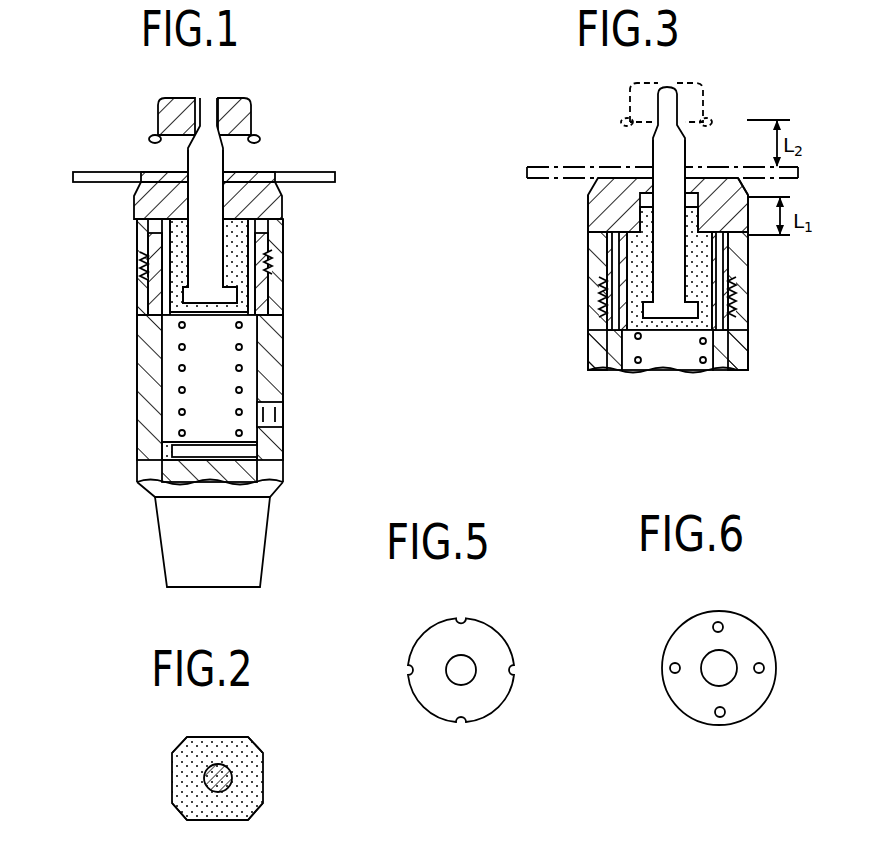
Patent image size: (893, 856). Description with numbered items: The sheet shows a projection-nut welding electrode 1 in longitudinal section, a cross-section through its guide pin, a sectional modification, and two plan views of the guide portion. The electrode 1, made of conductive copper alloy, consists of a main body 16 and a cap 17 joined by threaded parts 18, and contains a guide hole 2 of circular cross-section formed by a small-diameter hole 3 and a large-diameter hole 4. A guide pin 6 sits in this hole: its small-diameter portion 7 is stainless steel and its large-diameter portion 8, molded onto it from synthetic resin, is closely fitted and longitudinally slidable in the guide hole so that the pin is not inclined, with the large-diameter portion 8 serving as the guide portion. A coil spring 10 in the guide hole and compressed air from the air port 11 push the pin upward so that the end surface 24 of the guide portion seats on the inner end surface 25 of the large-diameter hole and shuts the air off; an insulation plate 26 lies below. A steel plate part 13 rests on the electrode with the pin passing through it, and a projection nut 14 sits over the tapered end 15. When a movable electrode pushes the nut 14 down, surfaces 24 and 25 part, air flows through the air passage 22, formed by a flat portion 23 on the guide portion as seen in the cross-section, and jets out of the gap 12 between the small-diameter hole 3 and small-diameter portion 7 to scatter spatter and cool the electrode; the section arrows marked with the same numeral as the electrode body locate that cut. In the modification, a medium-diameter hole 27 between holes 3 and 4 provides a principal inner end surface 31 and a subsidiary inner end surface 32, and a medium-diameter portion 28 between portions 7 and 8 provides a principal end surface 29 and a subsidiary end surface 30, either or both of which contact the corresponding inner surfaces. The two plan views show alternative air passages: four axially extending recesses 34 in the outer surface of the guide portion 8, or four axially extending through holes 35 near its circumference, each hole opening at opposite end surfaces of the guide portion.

In FIG. 1, the electrode 1 is at (130, 353).
In FIG. 3, the electrode 1 is at (572, 299).
In FIG. 1, the guide hole 2 is at (176, 414).
In FIG. 3, the guide hole 2 is at (710, 349).
In FIG. 1, the small-diameter hole 3 is at (238, 207).
In FIG. 3, the small-diameter hole 3 is at (653, 187).
In FIG. 1, the large-diameter hole 4 is at (257, 370).
In FIG. 3, the large-diameter hole 4 is at (673, 365).
In FIG. 1, the guide pin 6 is at (228, 159).
In FIG. 3, the guide pin 6 is at (689, 142).
In FIG. 5, the guide pin 6 is at (412, 634).
In FIG. 6, the guide pin 6 is at (668, 622).
In FIG. 1, the small-diameter portion 7 is at (190, 158).
In FIG. 3, the small-diameter portion 7 is at (680, 158).
In FIG. 2, the small-diameter portion 7 is at (203, 778).
In FIG. 5, the small-diameter portion 7 is at (458, 682).
In FIG. 6, the small-diameter portion 7 is at (713, 686).
In FIG. 1, the large-diameter portion (guide portion) 8 is at (247, 295).
In FIG. 3, the large-diameter portion (guide portion) 8 is at (623, 267).
In FIG. 2, the large-diameter portion (guide portion) 8 is at (257, 743).
In FIG. 5, the large-diameter portion (guide portion) 8 is at (508, 640).
In FIG. 6, the large-diameter portion (guide portion) 8 is at (762, 627).
In FIG. 1, the coil spring 10 is at (186, 393).
In FIG. 3, the coil spring 10 is at (643, 357).
In FIG. 1, the air port 11 is at (283, 412).
In FIG. 1, the gap 12 is at (145, 192).
In FIG. 1, the steel plate part 13 is at (331, 172).
In FIG. 3, the steel plate part 13 is at (543, 167).
In FIG. 1, the projection nut 14 is at (250, 104).
In FIG. 3, the projection nut 14 is at (718, 105).
In FIG. 1, the tapered end 15 is at (193, 110).
In FIG. 3, the tapered end 15 is at (659, 96).
In FIG. 1, the main body 16 is at (137, 472).
In FIG. 1, the cap 17 is at (140, 245).
In FIG. 1, the threaded parts 18 is at (140, 262).
In FIG. 1, the air passage 22 is at (163, 222).
In FIG. 3, the air passage 22 is at (623, 335).
In FIG. 2, the flat portion 23 is at (210, 736).
In FIG. 1, the end surface 24 is at (143, 210).
In FIG. 5, the end surface 24 is at (487, 697).
In FIG. 6, the end surface 24 is at (750, 697).
In FIG. 1, the inner end surface 25 is at (237, 220).
In FIG. 1, the insulation plate 26 is at (253, 450).
In FIG. 3, the medium-diameter hole 27 is at (640, 217).
In FIG. 3, the medium-diameter portion 28 is at (745, 240).
In FIG. 3, the principal end surface 29 is at (643, 215).
In FIG. 3, the subsidiary end surface 30 is at (647, 202).
In FIG. 3, the principal inner end surface 31 is at (730, 287).
In FIG. 3, the subsidiary inner end surface 32 is at (741, 193).
In FIG. 5, the recesses 34 is at (462, 617).
In FIG. 6, the through holes 35 is at (718, 622).